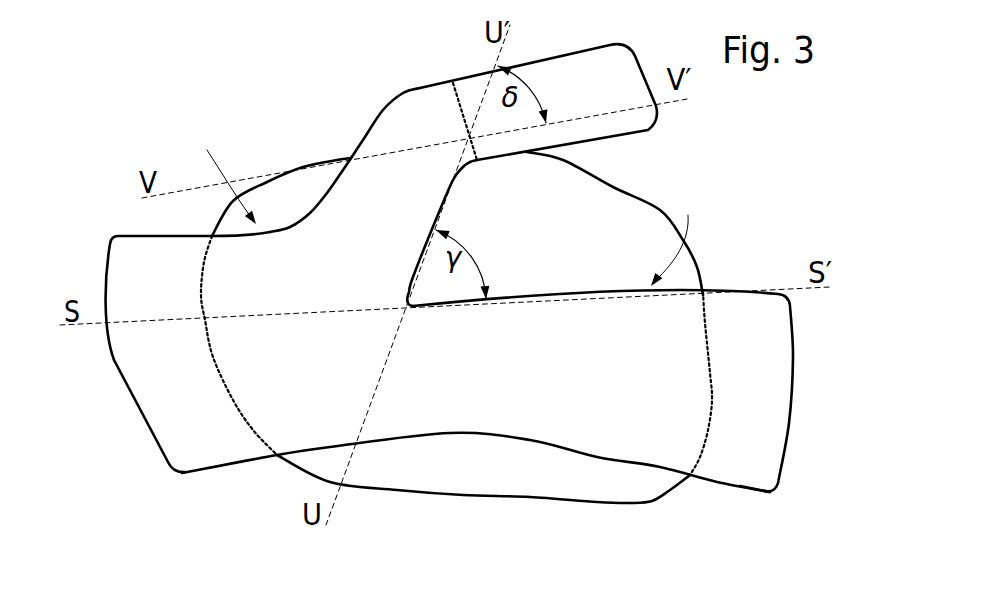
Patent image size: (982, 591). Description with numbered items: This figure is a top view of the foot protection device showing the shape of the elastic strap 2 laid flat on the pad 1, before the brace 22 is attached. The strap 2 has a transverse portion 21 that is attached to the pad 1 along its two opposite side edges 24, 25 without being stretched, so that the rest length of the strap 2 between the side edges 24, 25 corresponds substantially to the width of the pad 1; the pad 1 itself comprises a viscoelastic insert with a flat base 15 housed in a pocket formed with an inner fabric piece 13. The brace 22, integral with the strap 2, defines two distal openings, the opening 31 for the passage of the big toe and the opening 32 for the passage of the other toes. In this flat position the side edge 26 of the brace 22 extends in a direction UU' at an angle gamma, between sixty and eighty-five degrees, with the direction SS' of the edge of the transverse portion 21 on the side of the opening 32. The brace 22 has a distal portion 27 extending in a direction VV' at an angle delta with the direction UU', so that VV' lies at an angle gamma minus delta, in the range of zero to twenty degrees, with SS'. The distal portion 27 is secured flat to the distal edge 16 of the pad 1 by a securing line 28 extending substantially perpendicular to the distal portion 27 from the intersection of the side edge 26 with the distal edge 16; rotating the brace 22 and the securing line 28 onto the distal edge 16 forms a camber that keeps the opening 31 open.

The pad 1 is at (663, 500).
The elastic strap 2 is at (767, 497).
The inner fabric piece 13 is at (463, 475).
The flat base 15 is at (517, 498).
The distal longitudinal edge 16 is at (303, 167).
The transverse portion 21 is at (615, 423).
The brace 22 is at (388, 143).
The side edge 24 is at (237, 415).
The side edge 25 is at (710, 418).
The side edge of the brace 26 is at (445, 208).
The distal portion 27 is at (573, 82).
The securing line 28 is at (457, 107).
The opening 31 is at (222, 171).
The opening 32 is at (676, 236).